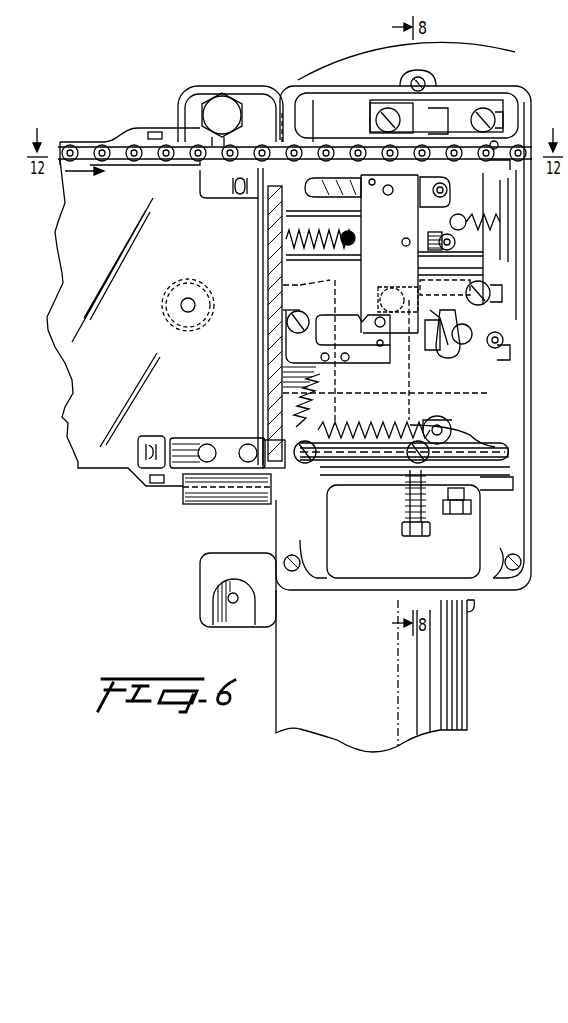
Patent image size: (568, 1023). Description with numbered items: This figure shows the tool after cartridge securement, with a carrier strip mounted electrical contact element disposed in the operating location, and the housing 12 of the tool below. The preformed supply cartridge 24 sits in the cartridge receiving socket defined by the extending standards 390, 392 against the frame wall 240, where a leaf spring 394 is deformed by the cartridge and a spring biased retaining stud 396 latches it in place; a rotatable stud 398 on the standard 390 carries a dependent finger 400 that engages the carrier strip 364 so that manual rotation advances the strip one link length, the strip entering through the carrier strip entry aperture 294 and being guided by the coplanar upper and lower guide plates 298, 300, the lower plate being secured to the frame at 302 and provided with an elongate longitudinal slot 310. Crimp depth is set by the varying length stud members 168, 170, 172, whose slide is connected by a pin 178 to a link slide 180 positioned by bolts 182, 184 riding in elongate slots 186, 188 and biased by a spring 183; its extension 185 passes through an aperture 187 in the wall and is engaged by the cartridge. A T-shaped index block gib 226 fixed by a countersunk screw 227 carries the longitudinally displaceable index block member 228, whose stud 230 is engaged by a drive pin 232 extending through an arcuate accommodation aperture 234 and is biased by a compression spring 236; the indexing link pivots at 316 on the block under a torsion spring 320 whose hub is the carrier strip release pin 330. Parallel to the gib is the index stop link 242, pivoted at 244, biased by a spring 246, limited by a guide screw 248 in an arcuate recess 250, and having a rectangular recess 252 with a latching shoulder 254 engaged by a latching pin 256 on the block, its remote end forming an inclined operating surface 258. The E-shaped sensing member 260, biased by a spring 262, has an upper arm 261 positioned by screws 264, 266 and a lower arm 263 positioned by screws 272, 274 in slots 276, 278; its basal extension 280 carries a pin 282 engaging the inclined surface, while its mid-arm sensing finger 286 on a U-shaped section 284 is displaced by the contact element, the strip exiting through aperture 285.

The tubular housing 12 is at (462, 680).
The preformed supply cartridge 24 is at (135, 128).
The spring biased stud member 168 is at (500, 497).
The spring biased stud member 170 is at (456, 514).
The spring biased stud member 172 is at (416, 538).
The pin 178 is at (445, 423).
The link slide 180 is at (460, 430).
The bolt 182 is at (306, 464).
The spring 183 is at (381, 423).
The bolt 184 is at (408, 462).
The extension 185 is at (270, 462).
The elongate slot 186 is at (354, 468).
The aperture 187 is at (262, 438).
The elongate slot 188 is at (503, 452).
The index block gib 226 is at (292, 255).
The countersunk screw 227 is at (348, 250).
The index block member 228 is at (372, 179).
The stud 230 is at (438, 210).
The drive pin 232 is at (455, 240).
The arcuately shaped accommodation aperture 234 is at (418, 250).
The compression spring 236 is at (331, 230).
The frame wall 240 is at (300, 232).
The index stop link 242 is at (361, 366).
The pivotal mounting 244 is at (268, 325).
The spring 246 is at (331, 408).
The guide screw 248 is at (430, 345).
The arcuate recess 250 is at (437, 360).
The rectangularly shaped recess 252 is at (383, 346).
The latching shoulder 254 is at (356, 323).
The latching pin 256 is at (384, 327).
The inclined operating surface 258 is at (470, 325).
The E-shaped member 260 is at (500, 190).
The upper extending arm 261 is at (432, 112).
The spring 262 is at (500, 222).
The lower extending arm 263 is at (490, 355).
The screw 264 is at (433, 113).
The screw 266 is at (478, 128).
The screw 272 is at (393, 250).
The screw 274 is at (500, 297).
The slot 276 is at (388, 240).
The slot 278 is at (492, 290).
The dependent basal extension 280 is at (470, 338).
The extending pin 282 is at (500, 345).
The U-shaped section 284 is at (496, 140).
The aperture 285 is at (526, 170).
The sensing finger 286 is at (455, 150).
The carrier strip entry aperture 294 is at (282, 145).
The upper guide plate 298 is at (324, 150).
The lower guide plate 300 is at (300, 212).
The securement point 302 is at (262, 244).
The elongate longitudinal slot 310 is at (306, 188).
The pivotal mounting 316 is at (386, 186).
The torsion spring 320 is at (380, 103).
The carrier strip release pin 330 is at (512, 150).
The carrier strip 364 is at (128, 166).
The standard 390 is at (186, 100).
The standard 392 is at (185, 500).
The leaf spring 394 is at (262, 366).
The spring biased retaining stud 396 is at (192, 306).
The rotatable stud 398 is at (222, 93).
The dependent finger 400 is at (218, 148).